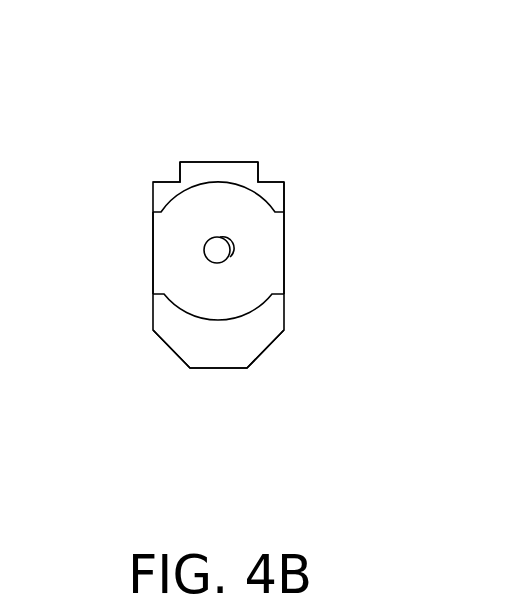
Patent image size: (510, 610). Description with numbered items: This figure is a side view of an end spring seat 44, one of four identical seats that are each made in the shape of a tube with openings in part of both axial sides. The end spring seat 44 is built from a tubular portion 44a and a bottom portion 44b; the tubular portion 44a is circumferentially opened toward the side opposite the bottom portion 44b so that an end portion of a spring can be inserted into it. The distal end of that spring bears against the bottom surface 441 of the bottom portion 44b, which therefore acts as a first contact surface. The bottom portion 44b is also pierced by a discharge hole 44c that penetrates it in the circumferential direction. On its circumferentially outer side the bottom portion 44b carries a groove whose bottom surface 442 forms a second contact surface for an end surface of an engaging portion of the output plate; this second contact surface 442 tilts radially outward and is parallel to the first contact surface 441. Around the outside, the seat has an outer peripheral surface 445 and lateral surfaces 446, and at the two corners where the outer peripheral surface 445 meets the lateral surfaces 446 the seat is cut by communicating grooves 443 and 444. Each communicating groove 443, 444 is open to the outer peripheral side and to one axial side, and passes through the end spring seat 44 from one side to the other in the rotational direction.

The end spring seat 44 is at (293, 127).
The bottom surface 441 is at (188, 280).
The bottom surface of the groove 442 is at (180, 257).
The communicating groove 443 is at (178, 164).
The communicating groove 444 is at (258, 164).
The outer peripheral surface 445 is at (220, 162).
The lateral surfaces 446 is at (153, 249).
The tubular portion 44a is at (284, 192).
The bottom portion 44b is at (215, 277).
The discharge hole 44c is at (231, 256).